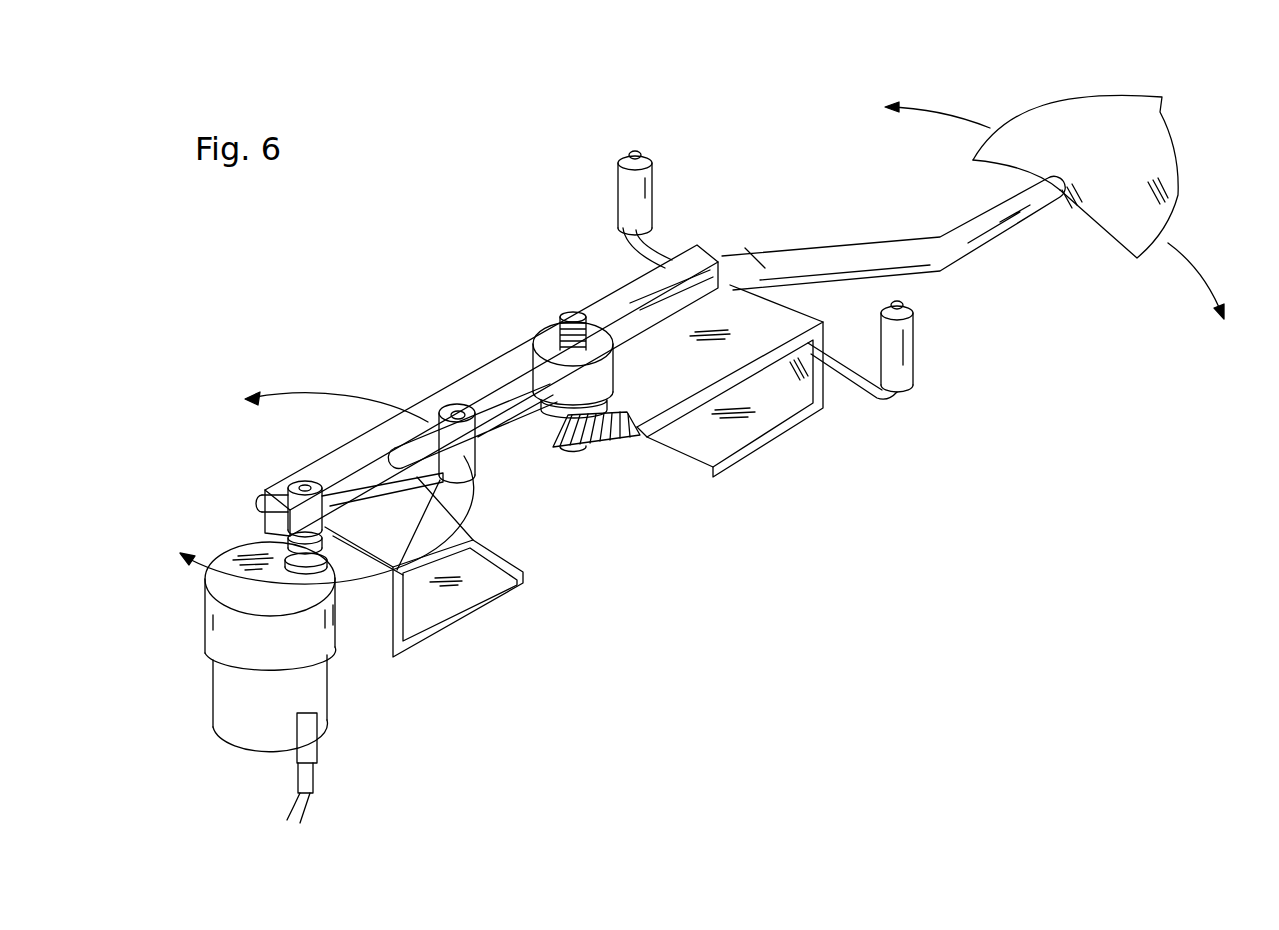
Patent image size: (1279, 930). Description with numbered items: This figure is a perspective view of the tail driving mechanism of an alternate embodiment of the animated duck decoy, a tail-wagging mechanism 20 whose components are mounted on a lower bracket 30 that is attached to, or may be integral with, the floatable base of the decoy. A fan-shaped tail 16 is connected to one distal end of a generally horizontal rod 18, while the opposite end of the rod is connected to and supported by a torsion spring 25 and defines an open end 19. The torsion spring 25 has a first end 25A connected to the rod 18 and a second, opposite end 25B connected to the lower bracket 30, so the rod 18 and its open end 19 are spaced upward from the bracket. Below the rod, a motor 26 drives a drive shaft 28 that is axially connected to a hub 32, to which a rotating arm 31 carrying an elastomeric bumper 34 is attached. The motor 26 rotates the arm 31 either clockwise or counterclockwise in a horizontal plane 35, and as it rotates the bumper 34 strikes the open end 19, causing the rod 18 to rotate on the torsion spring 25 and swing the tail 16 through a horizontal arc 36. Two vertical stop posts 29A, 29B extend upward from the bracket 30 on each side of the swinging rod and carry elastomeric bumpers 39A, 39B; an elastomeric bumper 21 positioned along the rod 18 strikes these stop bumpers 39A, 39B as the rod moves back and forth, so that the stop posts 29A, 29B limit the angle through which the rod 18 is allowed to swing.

The tail 16 is at (1077, 103).
The horizontal rod 18 is at (813, 260).
The open end 19 is at (404, 452).
The tail-wagging mechanism 20 is at (378, 258).
The elastomeric bumper 21 is at (753, 247).
The torsion spring 25 is at (615, 402).
The first end 25A is at (705, 302).
The second end 25B is at (400, 532).
The motor 26 is at (206, 584).
The drive shaft 28 is at (285, 540).
The vertical stop post 29A is at (904, 308).
The vertical stop post 29B is at (645, 155).
The lower bracket 30 is at (487, 370).
The rotating arm 31 is at (254, 504).
The hub 32 is at (296, 483).
The elastomeric bumper 34 is at (477, 455).
The horizontal plane 35 is at (232, 402).
The horizontal arc 36 is at (937, 112).
The elastomeric bumper 39A is at (913, 343).
The elastomeric bumper 39B is at (653, 195).